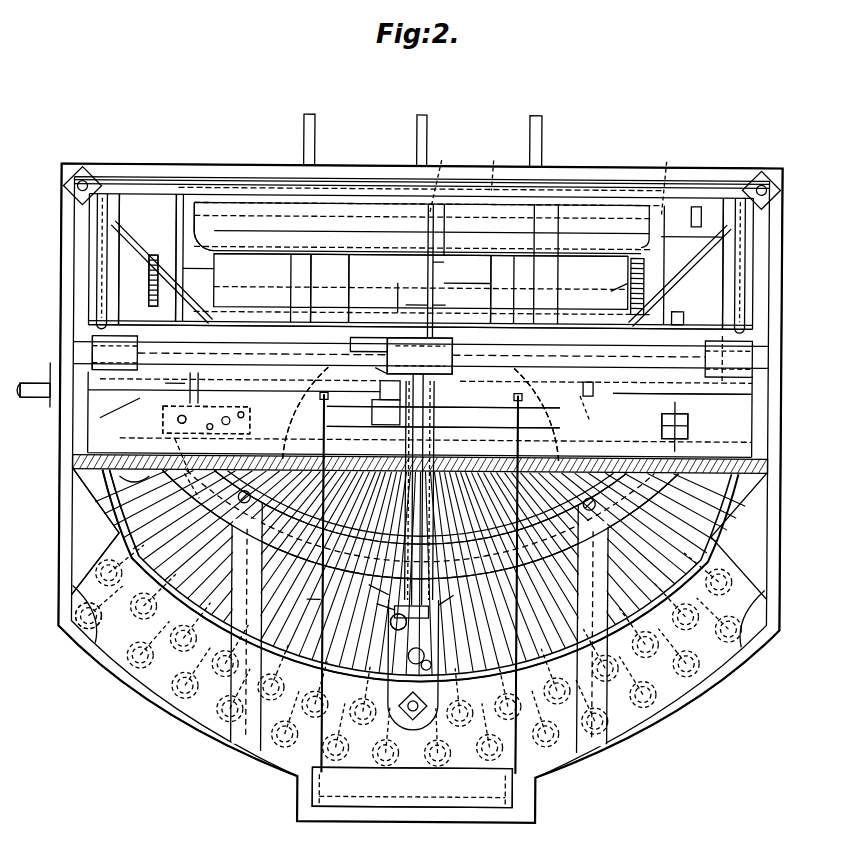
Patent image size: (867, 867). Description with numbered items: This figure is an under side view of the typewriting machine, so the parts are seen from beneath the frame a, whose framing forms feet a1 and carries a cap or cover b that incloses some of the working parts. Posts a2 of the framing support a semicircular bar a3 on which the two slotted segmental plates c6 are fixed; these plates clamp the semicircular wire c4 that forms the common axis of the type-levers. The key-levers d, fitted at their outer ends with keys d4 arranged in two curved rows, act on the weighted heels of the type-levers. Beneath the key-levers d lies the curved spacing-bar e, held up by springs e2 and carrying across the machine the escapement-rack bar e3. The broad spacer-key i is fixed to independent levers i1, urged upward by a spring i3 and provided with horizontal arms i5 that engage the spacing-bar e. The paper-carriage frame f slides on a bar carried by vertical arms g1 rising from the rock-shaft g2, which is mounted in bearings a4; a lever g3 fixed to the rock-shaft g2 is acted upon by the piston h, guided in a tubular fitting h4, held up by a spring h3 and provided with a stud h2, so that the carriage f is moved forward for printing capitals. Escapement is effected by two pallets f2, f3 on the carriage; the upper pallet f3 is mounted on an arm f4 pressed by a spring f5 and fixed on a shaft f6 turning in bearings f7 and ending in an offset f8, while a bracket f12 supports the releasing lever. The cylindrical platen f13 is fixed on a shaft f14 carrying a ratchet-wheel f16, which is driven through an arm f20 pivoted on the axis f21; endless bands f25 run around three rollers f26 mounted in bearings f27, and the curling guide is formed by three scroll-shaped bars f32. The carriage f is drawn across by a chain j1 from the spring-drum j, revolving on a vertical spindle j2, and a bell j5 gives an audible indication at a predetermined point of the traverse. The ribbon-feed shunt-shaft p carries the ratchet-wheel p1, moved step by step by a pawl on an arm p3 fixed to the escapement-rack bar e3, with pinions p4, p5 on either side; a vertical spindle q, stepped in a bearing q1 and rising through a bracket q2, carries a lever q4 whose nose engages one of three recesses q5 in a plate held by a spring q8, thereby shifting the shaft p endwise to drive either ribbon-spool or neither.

The frame a is at (421, 311).
The feet a1 is at (758, 158).
The posts a2 is at (446, 400).
The semicircular bar a3 is at (166, 502).
The bearings a4 is at (416, 396).
The cap or cover b is at (395, 516).
The axis of motion c4 is at (527, 414).
The segmental or semicircular plates c6 is at (291, 413).
The key-levers d is at (419, 593).
The keys d4 is at (276, 682).
The curved spacing-bar e is at (407, 515).
The springs e2 is at (421, 261).
The escapement-rack bar e3 is at (420, 314).
The paper-carriage frame f is at (413, 259).
The lower pallet f2 is at (411, 304).
The upper pallet f3 is at (443, 304).
The arm f4 is at (495, 168).
The spring f5 is at (467, 279).
The shaft or spindle f6 is at (689, 215).
The bearings f7 is at (550, 181).
The offset f8 is at (692, 245).
The bracket f12 is at (657, 286).
The cylindrical platen f13 is at (421, 268).
The shaft or spindle f14 is at (198, 270).
The ratchet-wheel f16 is at (161, 273).
The arm or lever f20 is at (657, 265).
The axis of motion f21 is at (683, 307).
The endless bands f25 is at (412, 288).
The rollers f26 is at (476, 289).
The bearings f27 is at (413, 289).
The curling-guide bars f32 is at (434, 140).
The vertical arms g1 is at (93, 340).
The rock-shaft g2 is at (421, 353).
The lever g3 is at (411, 388).
The piston h is at (406, 592).
The stud or projection h2 is at (402, 621).
The springs h3 is at (420, 525).
The tubular fittings or guides h4 is at (370, 584).
The broad spacer-key i is at (406, 769).
The arms or levers i1 is at (418, 584).
The spring i3 is at (443, 413).
The horizontal arms i5 is at (431, 600).
The spring-drum j is at (682, 381).
The chain j1 is at (588, 407).
The vertical spindle j2 is at (661, 425).
The bell or gong j5 is at (594, 386).
The horizontal shaft p is at (200, 387).
The ratchet-wheel p1 is at (386, 412).
The horizontal arm p3 is at (355, 343).
The pinion p4 is at (419, 356).
The pinion p5 is at (371, 365).
The vertical spindle q is at (197, 420).
The bearing q1 is at (204, 406).
The bracket q2 is at (194, 454).
The lever q4 is at (175, 436).
The recesses or stops q5 is at (186, 485).
The spring q8 is at (134, 486).